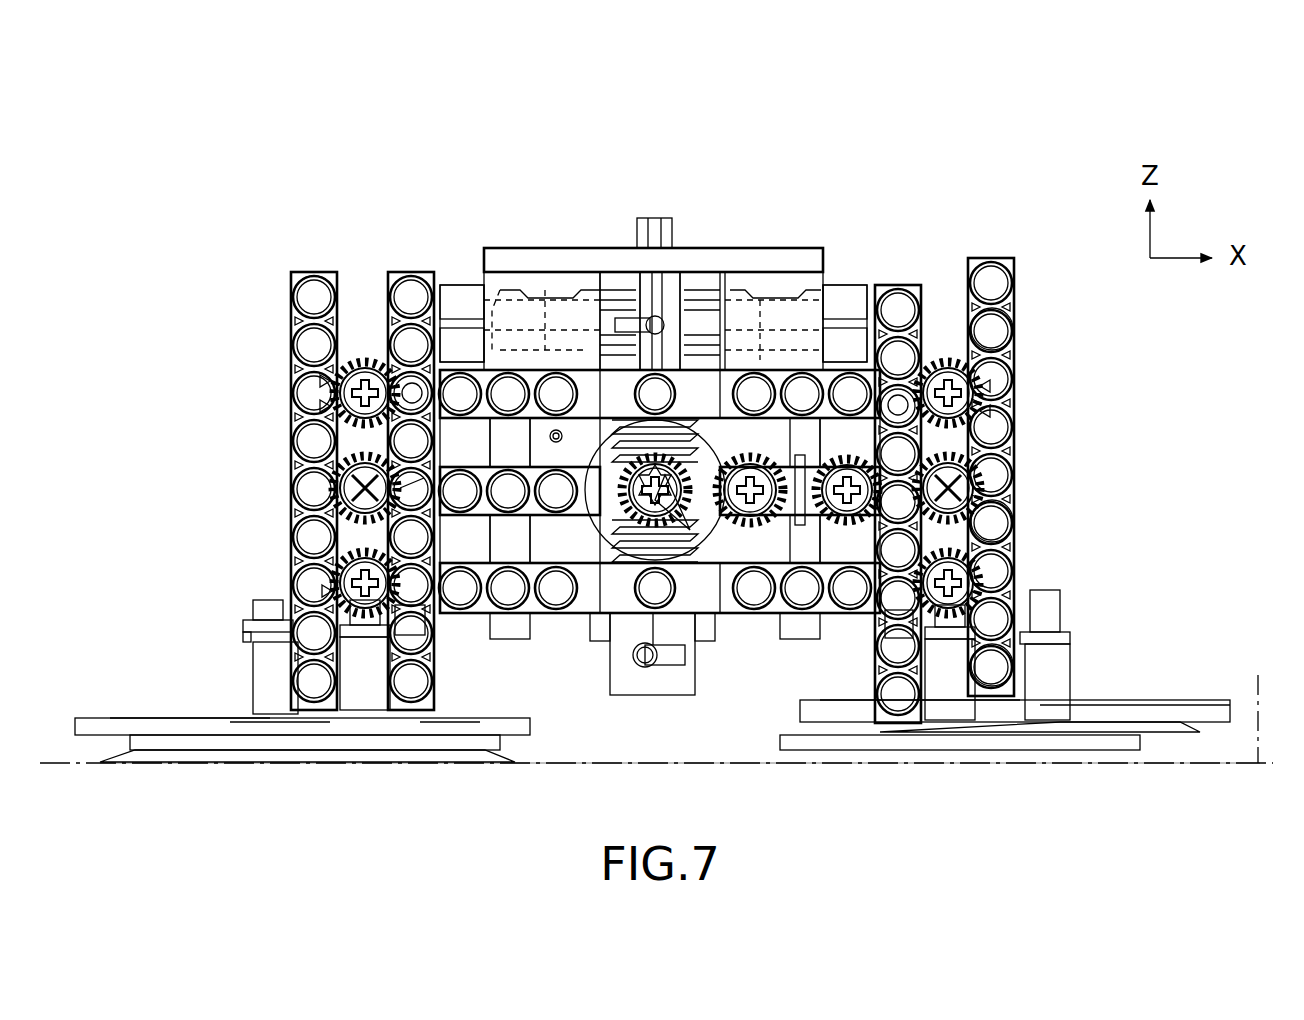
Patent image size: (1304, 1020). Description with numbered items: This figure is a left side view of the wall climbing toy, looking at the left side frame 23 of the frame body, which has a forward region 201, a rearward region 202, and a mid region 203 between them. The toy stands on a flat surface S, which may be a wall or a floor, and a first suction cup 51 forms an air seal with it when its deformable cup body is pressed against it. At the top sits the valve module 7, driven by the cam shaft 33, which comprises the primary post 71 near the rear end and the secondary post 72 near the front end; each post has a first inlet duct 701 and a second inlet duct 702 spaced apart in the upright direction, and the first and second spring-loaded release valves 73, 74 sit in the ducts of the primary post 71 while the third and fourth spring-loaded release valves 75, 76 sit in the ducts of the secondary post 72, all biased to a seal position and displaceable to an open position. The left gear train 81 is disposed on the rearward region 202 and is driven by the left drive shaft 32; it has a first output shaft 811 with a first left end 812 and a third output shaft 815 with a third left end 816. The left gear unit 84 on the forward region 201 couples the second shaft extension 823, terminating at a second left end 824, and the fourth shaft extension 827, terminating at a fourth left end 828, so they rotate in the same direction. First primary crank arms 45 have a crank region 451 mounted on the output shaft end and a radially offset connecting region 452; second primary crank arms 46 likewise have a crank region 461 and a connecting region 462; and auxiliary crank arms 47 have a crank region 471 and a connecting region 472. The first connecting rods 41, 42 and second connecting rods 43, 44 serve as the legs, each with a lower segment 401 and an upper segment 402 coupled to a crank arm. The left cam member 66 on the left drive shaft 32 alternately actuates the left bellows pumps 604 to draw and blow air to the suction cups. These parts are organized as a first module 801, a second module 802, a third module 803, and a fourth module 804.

The valve module 7 is at (641, 145).
The left side frame 23 is at (788, 355).
The left drive shaft 32 is at (650, 520).
The cam shaft 33 is at (658, 222).
The first connecting rod 41 is at (895, 285).
The first connecting rod 42 is at (1000, 258).
The second connecting rod 43 is at (305, 272).
The second connecting rod 44 is at (412, 385).
The first primary crank arm 45 is at (945, 355).
The second primary crank arm 46 is at (370, 355).
The auxiliary crank arm 47 is at (365, 610).
The first suction cup 51 is at (1035, 772).
The left cam member 66 is at (660, 500).
The primary post 71 is at (826, 290).
The secondary post 72 is at (490, 320).
The first spring-loaded release valve 73 is at (700, 330).
The second spring-loaded release valve 74 is at (700, 335).
The third spring-loaded release valve 75 is at (605, 300).
The fourth spring-loaded release valve 76 is at (613, 350).
The left gear train 81 is at (800, 540).
The left gear unit 84 is at (458, 500).
The forward region 201 is at (463, 300).
The rearward region 202 is at (848, 285).
The mid region 203 is at (740, 350).
The lower segment 401 is at (300, 312).
The upper segment 402 is at (300, 545).
The crank region 451 is at (953, 360).
The connecting region 452 is at (900, 395).
The crank region 461 is at (352, 360).
The connecting region 462 is at (412, 385).
The crank region 471 is at (330, 650).
The connecting region 472 is at (418, 610).
The left bellows pump 604 is at (618, 470).
The first inlet duct 701 is at (500, 300).
The second inlet duct 702 is at (545, 345).
The first module 801 is at (780, 690).
The second module 802 is at (970, 493).
The third module 803 is at (333, 490).
The fourth module 804 is at (485, 690).
The first output shaft 811 is at (982, 386).
The first left end 812 is at (985, 415).
The third output shaft 815 is at (985, 585).
The third left end 816 is at (1055, 622).
The second shaft extension 823 is at (330, 378).
The second left end 824 is at (322, 405).
The fourth shaft extension 827 is at (330, 568).
The fourth left end 828 is at (328, 590).
The flat surface S is at (1262, 702).